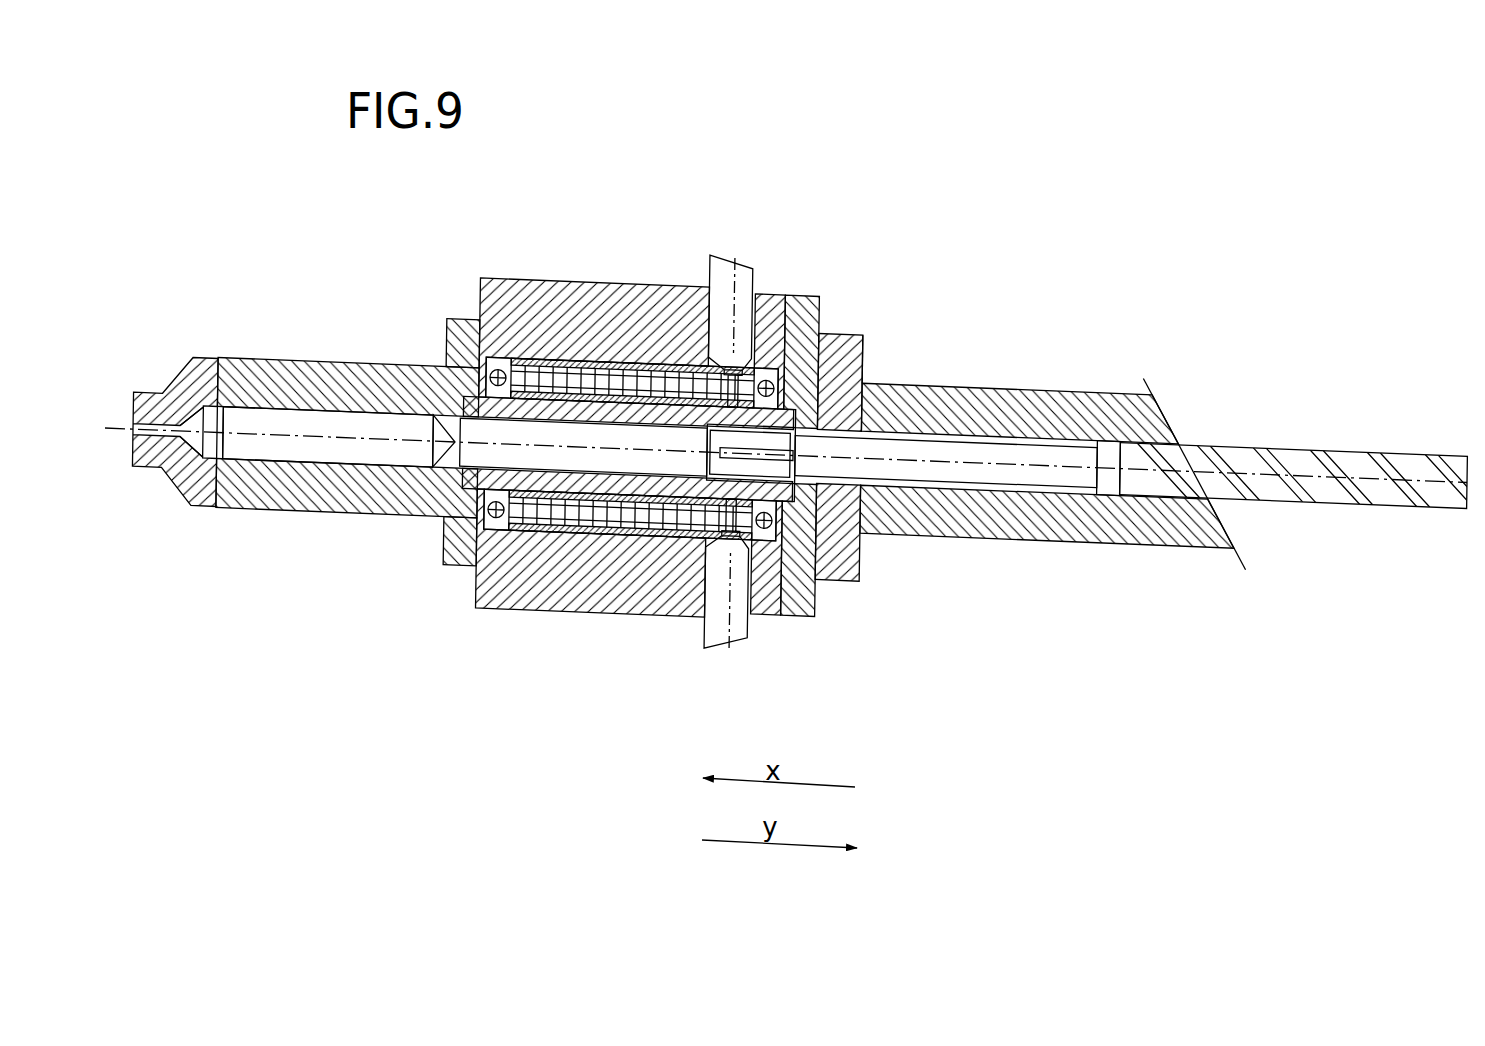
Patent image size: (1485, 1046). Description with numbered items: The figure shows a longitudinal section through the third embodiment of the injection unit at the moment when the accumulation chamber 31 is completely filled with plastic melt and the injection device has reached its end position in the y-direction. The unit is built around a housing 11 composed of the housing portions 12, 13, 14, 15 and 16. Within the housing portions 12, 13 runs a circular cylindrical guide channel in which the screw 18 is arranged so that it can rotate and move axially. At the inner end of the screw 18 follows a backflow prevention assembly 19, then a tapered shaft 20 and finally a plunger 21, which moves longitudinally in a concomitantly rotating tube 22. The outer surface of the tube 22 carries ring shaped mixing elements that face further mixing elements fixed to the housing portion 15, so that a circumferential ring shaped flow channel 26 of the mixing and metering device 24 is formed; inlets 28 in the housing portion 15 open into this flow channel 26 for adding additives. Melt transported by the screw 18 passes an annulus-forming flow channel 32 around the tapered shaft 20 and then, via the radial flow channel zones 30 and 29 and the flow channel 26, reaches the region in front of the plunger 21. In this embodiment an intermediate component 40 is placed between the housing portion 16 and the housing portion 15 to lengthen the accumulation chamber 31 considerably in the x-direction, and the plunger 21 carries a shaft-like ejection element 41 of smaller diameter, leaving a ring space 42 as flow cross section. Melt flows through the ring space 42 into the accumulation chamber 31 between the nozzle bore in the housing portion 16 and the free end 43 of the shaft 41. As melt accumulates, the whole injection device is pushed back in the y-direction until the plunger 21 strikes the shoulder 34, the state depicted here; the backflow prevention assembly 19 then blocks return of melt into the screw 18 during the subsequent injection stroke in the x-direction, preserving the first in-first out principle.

The housing 11 is at (609, 256).
The housing portion 12 is at (1037, 413).
The housing portion 13 is at (838, 352).
The housing portion 14 is at (803, 295).
The housing portion 15 is at (540, 300).
The housing portion 16 is at (156, 400).
The screw 18 is at (1225, 440).
The backflow prevention assembly 19 is at (1107, 450).
The tapered shaft 20 is at (915, 450).
The plunger 21 is at (762, 437).
The concomitantly rotating tube 22 is at (537, 542).
The mixing and metering device 24 is at (607, 548).
The flow channel 26 is at (660, 542).
The inlets 28 is at (741, 283).
The radial flow channel zone 29 is at (447, 498).
The radial flow channel zone 30 is at (820, 518).
The accumulation chamber 31 is at (197, 437).
The annulus-forming flow channel 32 is at (872, 505).
The shoulder 34 is at (870, 345).
The intermediate component 40 is at (279, 356).
The shaft-like ejection element 41 is at (603, 453).
The ring space 42 is at (333, 425).
The free end 43 is at (443, 427).